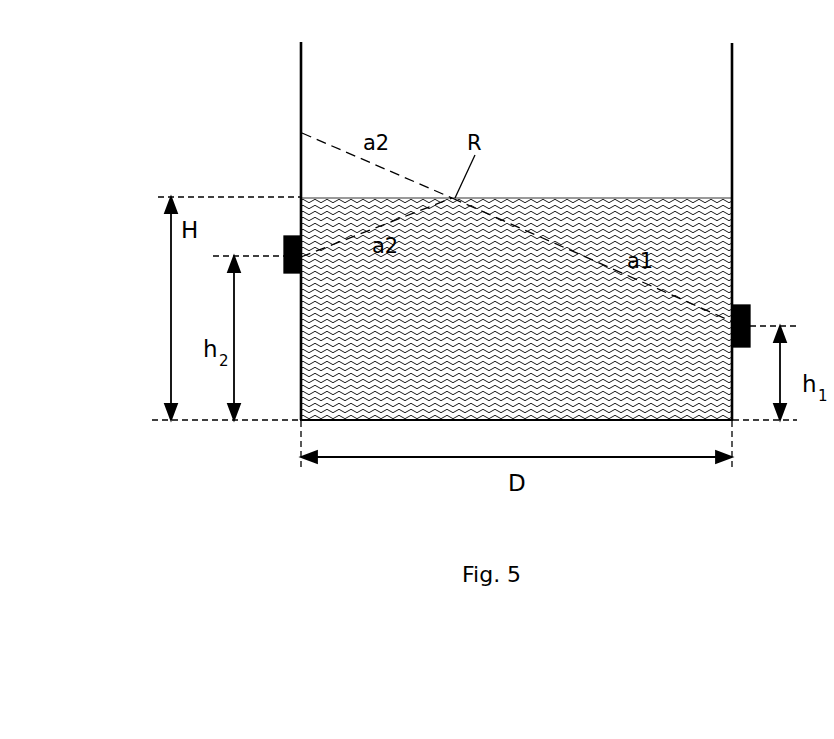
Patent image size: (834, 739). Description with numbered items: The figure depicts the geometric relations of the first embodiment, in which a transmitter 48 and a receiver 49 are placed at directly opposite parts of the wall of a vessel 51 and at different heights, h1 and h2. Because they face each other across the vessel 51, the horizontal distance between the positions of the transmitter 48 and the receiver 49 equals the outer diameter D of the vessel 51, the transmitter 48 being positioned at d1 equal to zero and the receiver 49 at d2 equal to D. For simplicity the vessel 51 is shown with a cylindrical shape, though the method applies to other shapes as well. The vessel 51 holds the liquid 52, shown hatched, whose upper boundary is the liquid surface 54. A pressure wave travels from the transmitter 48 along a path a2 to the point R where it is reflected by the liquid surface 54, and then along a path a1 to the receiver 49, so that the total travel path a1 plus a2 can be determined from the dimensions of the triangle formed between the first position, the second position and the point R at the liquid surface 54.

The transmitter 48 is at (747, 308).
The receiver 49 is at (291, 237).
The vessel 51 is at (733, 152).
The liquid 52 is at (497, 367).
The liquid surface 54 is at (586, 198).